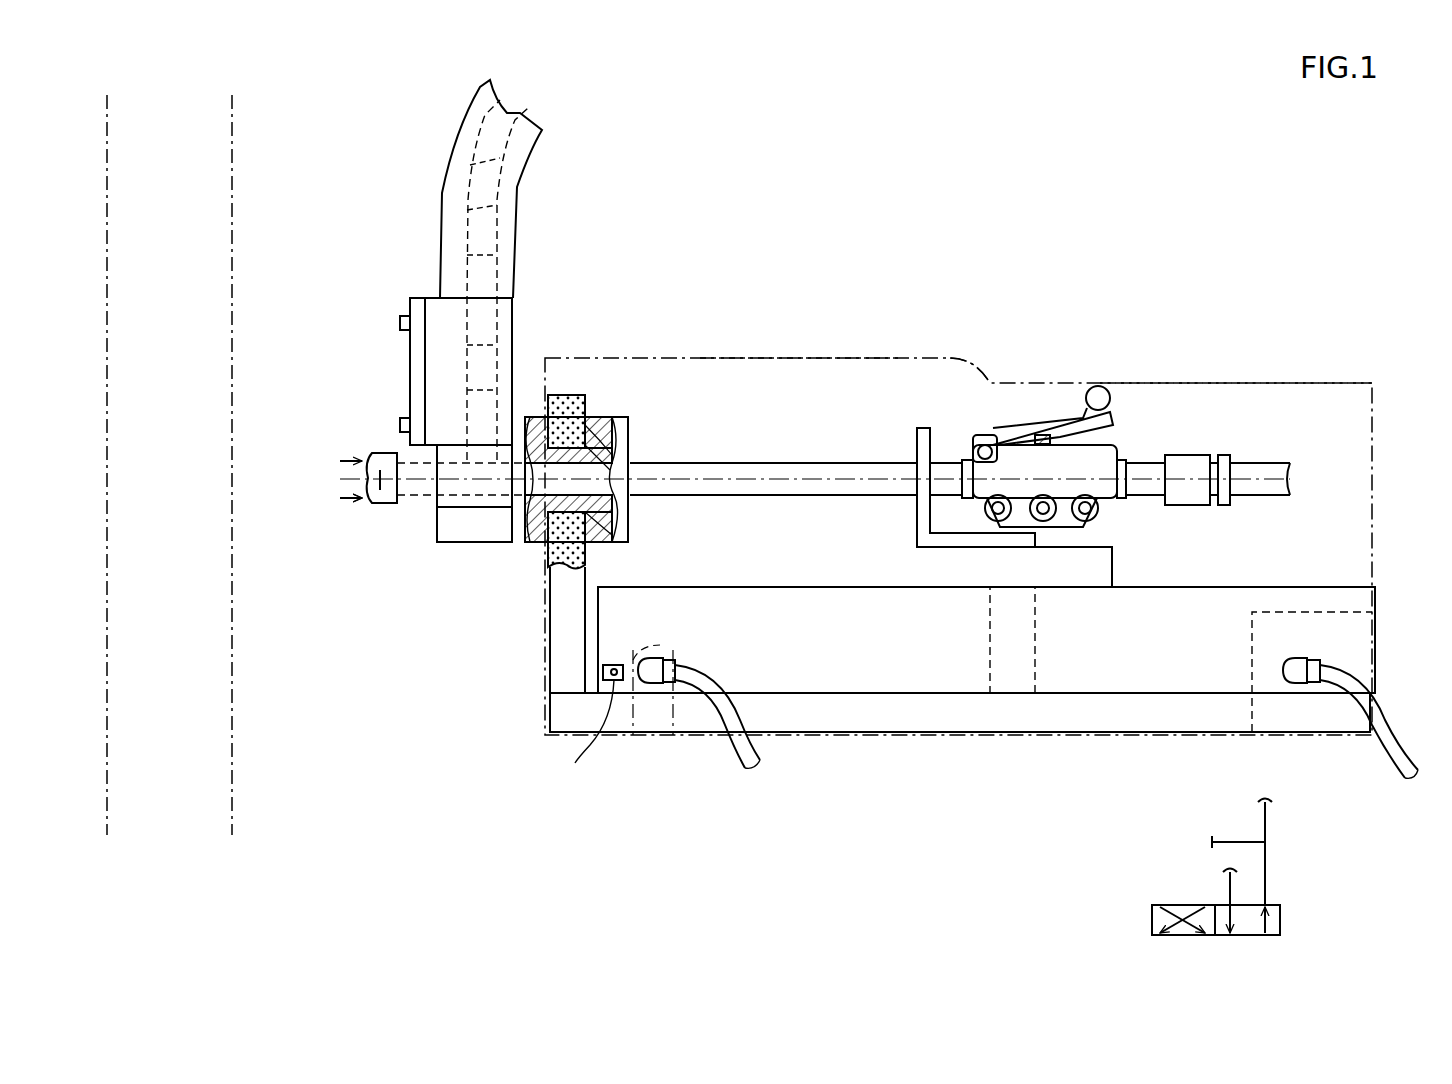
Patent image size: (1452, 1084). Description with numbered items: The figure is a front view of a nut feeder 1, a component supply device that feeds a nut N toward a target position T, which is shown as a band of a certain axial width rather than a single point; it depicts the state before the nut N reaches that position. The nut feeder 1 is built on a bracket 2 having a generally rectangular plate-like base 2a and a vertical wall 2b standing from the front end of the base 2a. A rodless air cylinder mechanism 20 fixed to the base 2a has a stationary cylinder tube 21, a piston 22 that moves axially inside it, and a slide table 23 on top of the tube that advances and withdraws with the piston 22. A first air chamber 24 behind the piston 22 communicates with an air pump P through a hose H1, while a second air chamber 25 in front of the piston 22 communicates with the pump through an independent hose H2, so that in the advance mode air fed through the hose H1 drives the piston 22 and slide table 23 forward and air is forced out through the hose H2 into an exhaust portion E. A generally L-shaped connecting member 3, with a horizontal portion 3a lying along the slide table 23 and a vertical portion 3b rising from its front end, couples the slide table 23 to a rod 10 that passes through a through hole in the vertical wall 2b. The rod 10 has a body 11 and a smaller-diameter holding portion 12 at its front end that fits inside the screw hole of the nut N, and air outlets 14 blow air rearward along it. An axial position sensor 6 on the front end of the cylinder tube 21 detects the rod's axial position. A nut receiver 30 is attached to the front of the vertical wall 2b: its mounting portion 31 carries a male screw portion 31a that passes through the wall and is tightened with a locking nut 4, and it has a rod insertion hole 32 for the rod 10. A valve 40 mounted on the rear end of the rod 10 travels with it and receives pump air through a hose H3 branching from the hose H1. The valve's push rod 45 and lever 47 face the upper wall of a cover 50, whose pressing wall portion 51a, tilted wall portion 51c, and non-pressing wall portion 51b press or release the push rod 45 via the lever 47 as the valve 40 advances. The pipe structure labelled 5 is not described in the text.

The nut feeder 1 is at (1135, 262).
The bracket 2 is at (1343, 733).
The base 2a is at (1090, 715).
The vertical wall 2b is at (550, 605).
The connecting member 3 is at (915, 430).
The horizontal portion 3a is at (990, 548).
The vertical portion 3b is at (917, 515).
The locking nut 4 is at (590, 420).
The pipe 5 is at (513, 200).
The axial position sensor 6 is at (603, 672).
The rod 10 is at (772, 463).
The body 11 is at (722, 466).
The holding portion 12 is at (375, 468).
The air outlets 14 is at (345, 478).
The air cylinder mechanism 20 is at (730, 587).
The cylinder tube 21 is at (815, 610).
The piston 22 is at (1012, 690).
The slide table 23 is at (1112, 570).
The first air chamber 24 is at (1150, 655).
The second air chamber 25 is at (897, 650).
The nut receiver 30 is at (460, 545).
The mounting portion 31 is at (540, 417).
The male screw portion 31a is at (628, 525).
The rod insertion hole 32 is at (625, 470).
The valve 40 is at (1120, 445).
The push rod 45 is at (1045, 432).
The lever 47 is at (1030, 420).
The cover 50 is at (640, 358).
The pressing wall portion 51a is at (1215, 383).
The non-pressing wall portion 51b is at (790, 358).
The tilted wall portion 51c is at (975, 370).
The hose H1 is at (1395, 730).
The hose H2 is at (745, 750).
The hose H3 is at (1257, 478).
The target position T is at (230, 103).
The nut N is at (388, 503).
The exhaust portion E is at (1216, 938).
The air pump P is at (1288, 822).